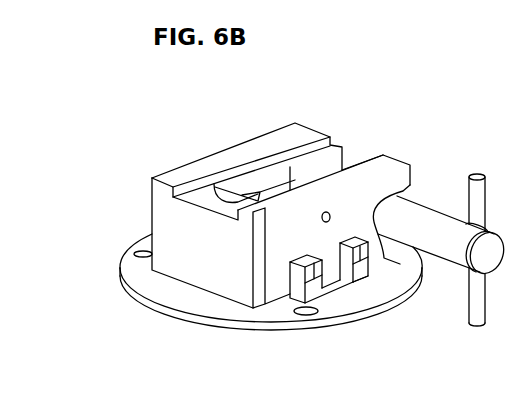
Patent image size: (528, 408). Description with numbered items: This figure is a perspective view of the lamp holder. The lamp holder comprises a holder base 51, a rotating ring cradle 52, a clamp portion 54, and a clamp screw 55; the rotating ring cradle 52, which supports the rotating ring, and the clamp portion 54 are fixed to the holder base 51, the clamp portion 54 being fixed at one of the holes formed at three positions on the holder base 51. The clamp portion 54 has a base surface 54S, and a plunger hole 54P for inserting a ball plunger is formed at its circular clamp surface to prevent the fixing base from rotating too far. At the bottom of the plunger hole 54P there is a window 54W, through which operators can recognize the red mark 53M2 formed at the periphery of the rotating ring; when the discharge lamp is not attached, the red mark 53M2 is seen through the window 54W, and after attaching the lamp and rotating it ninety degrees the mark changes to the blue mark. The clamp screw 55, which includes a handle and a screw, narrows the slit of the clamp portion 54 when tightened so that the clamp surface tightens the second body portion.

The holder base 51 is at (168, 291).
The rotating ring cradle 52 is at (358, 275).
The red mark 53M2 is at (323, 242).
The clamp portion 54 is at (277, 252).
The base surface 54S is at (262, 146).
The plunger hole 54P is at (329, 211).
The window 54W is at (338, 242).
The clamp screw 55 is at (418, 200).